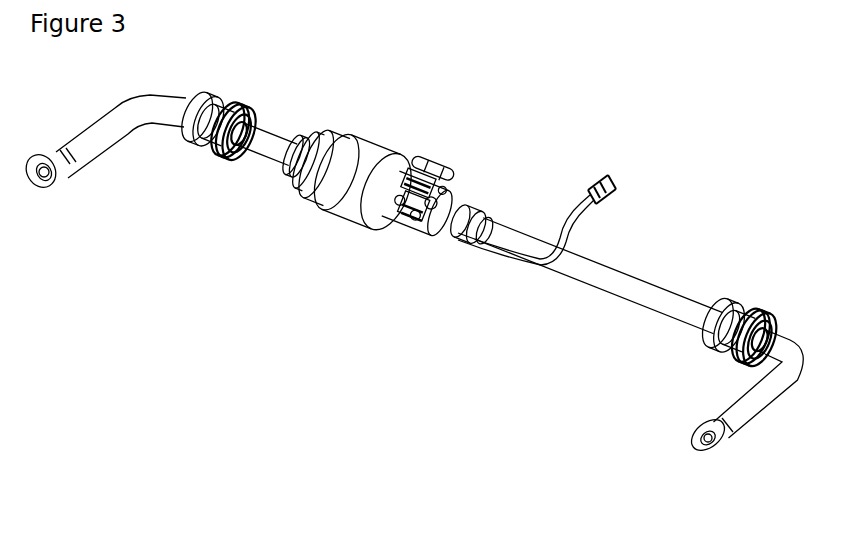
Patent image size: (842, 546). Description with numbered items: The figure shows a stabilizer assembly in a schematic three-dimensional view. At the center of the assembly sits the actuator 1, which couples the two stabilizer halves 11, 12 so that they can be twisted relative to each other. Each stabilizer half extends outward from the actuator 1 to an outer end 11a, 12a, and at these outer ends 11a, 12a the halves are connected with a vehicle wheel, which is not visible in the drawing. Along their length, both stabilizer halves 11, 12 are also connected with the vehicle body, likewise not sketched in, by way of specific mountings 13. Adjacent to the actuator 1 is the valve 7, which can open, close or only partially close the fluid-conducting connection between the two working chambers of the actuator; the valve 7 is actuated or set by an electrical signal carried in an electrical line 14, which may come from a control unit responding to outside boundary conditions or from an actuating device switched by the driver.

The actuator 1 is at (348, 145).
The valve 7 is at (395, 210).
The stabilizer half 11 is at (128, 115).
The outer end 11a is at (52, 173).
The stabilizer half 12 is at (573, 262).
The outer end 12a is at (710, 440).
The mounting 13 is at (220, 108).
The electrical line 14 is at (560, 220).